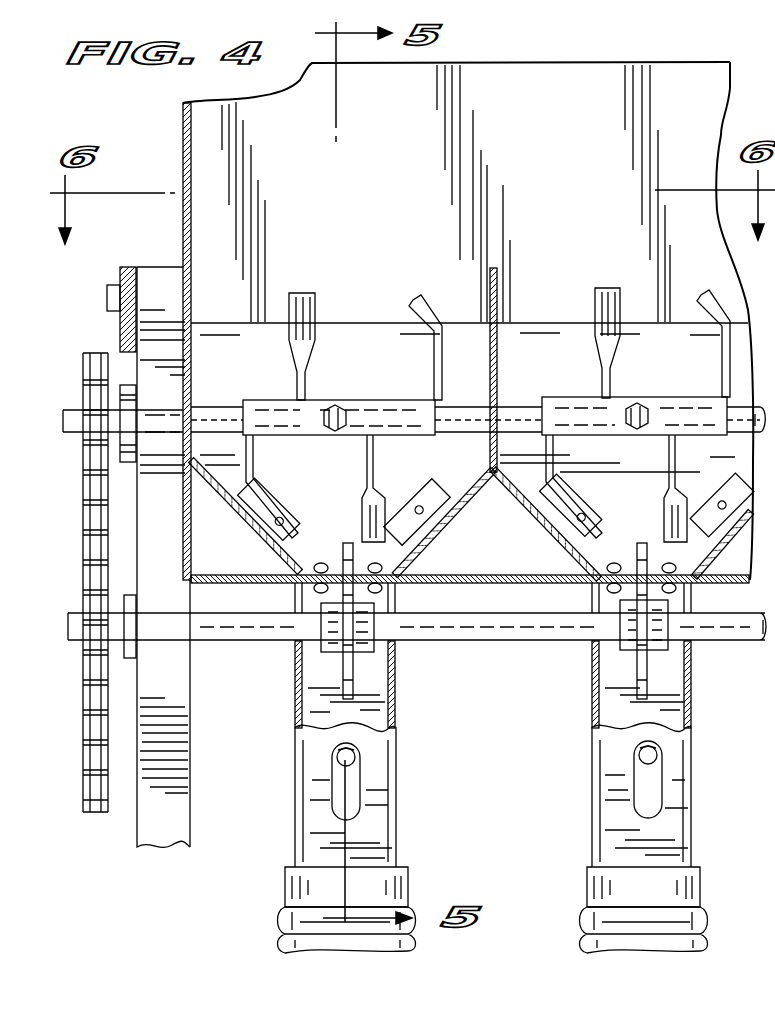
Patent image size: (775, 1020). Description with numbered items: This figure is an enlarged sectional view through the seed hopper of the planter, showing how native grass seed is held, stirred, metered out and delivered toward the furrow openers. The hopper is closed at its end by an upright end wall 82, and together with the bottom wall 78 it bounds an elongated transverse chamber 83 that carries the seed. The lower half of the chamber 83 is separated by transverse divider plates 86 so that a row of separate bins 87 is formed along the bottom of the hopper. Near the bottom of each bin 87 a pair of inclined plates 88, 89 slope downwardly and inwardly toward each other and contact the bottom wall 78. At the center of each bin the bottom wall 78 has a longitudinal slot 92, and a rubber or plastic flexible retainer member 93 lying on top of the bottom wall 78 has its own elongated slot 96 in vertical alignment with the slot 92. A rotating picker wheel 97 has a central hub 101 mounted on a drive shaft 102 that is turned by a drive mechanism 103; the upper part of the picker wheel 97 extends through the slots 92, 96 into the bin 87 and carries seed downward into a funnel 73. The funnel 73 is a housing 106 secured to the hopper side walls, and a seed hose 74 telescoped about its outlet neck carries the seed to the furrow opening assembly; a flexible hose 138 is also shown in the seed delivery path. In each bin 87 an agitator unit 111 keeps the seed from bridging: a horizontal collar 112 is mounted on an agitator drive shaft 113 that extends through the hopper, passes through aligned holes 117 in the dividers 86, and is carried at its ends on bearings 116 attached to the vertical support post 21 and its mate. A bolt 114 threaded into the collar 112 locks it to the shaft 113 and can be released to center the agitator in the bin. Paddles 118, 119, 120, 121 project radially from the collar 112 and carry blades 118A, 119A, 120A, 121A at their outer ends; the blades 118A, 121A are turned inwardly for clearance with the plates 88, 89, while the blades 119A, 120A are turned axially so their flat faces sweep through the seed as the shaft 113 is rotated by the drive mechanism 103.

The vertical support post 21 is at (178, 264).
The funnel 73 is at (398, 697).
The seed tube or hose 74 is at (280, 924).
The bottom wall 78 is at (270, 583).
The upright end wall 82 is at (182, 124).
The transverse chamber 83 is at (578, 88).
The transverse divider plate 86 is at (498, 266).
The bin 87 is at (478, 400).
The inclined plate 88 is at (216, 506).
The inclined plate 89 is at (448, 530).
The longitudinal slot 92 is at (355, 583).
The flexible member or retainer plate 93 is at (326, 563).
The elongated slot 96 is at (343, 566).
The picker wheel 97 is at (396, 673).
The central hub 101 is at (335, 652).
The drive shaft 102 is at (259, 638).
The drive mechanism 103 is at (74, 561).
The funnel housing 106 is at (315, 836).
The agitator unit 111 is at (331, 301).
The collar or sleeve 112 is at (275, 408).
The agitator drive shaft 113 is at (221, 418).
The bolt 114 is at (333, 432).
The bearing 116 is at (128, 452).
The hole 117 is at (500, 404).
The paddle 118 is at (248, 468).
The blade 118A is at (280, 526).
The paddle 119 is at (306, 374).
The blade 119A is at (301, 291).
The paddle 120 is at (377, 452).
The blade 120A is at (398, 515).
The paddle 121 is at (440, 362).
The blade 121A is at (416, 298).
The flexible hose 138 is at (350, 790).